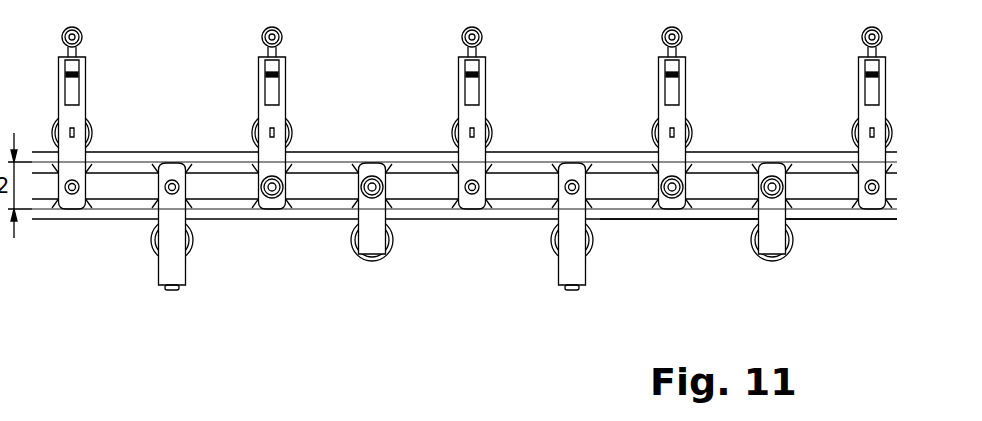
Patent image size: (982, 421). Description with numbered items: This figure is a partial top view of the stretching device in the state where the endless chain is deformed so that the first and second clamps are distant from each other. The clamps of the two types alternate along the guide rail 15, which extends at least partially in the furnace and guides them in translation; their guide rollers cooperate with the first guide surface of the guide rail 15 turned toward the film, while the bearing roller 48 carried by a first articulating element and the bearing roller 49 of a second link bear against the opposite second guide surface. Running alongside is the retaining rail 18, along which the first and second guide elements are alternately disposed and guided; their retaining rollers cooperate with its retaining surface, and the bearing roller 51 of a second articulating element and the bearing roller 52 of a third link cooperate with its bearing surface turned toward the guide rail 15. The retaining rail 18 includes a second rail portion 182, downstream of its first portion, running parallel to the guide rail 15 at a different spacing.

The guide rail 15 is at (128, 157).
The retaining rail 18 is at (125, 215).
The second rail portion 182 is at (713, 213).
The bearing roller 48 is at (293, 208).
The bearing roller 49 is at (495, 212).
The bearing roller 51 is at (393, 165).
The bearing roller 52 is at (185, 168).